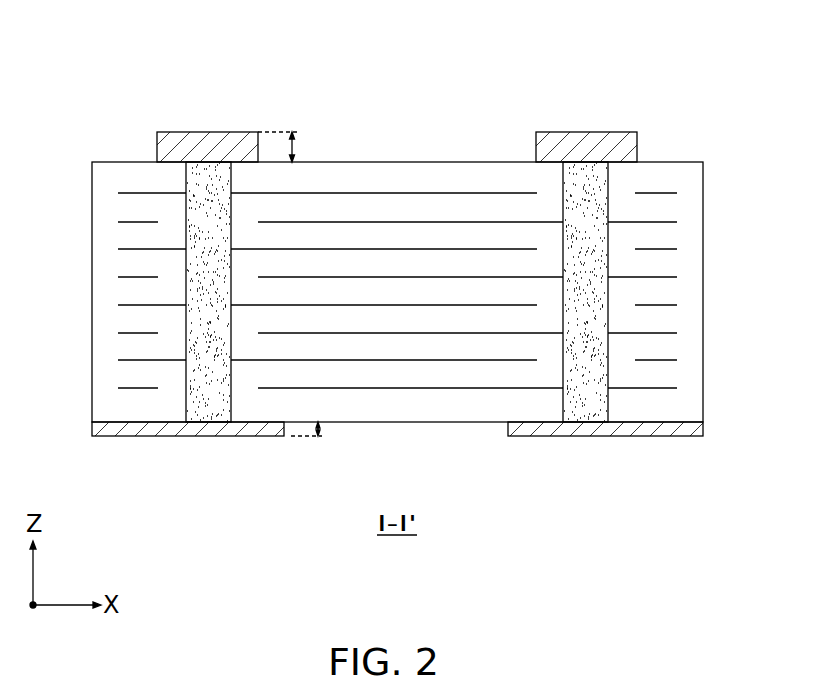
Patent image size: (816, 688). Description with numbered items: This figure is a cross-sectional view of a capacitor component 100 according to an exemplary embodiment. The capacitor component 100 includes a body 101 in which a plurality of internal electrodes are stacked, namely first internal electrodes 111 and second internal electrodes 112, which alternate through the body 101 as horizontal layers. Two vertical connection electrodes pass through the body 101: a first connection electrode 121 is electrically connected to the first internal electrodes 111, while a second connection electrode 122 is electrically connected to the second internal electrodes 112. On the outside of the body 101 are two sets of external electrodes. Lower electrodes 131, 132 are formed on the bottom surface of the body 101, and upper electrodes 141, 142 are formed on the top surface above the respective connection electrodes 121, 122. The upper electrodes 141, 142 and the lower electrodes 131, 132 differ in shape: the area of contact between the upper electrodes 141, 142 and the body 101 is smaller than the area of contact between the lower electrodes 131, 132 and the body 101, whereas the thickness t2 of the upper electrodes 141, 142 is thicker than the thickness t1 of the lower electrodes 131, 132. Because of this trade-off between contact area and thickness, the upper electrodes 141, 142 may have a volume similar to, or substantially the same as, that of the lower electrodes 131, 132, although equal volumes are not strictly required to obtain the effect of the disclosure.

The capacitor component 100 is at (493, 46).
The body 101 is at (458, 175).
The first internal electrode 111 is at (130, 193).
The second internal electrode 112 is at (130, 222).
The first connection electrode 121 is at (195, 287).
The second connection electrode 122 is at (600, 287).
The lower electrode 131 is at (158, 432).
The lower electrode 132 is at (648, 432).
The upper electrode 141 is at (207, 134).
The upper electrode 142 is at (585, 134).
The thickness of the lower electrodes t1 is at (322, 430).
The thickness of the upper electrodes t2 is at (295, 146).